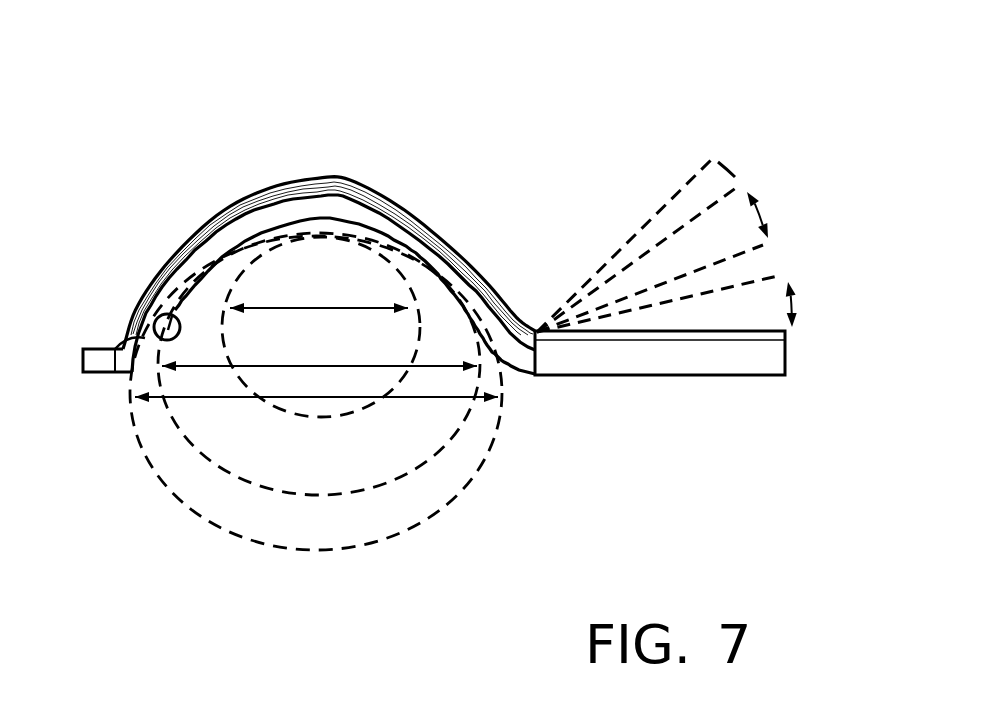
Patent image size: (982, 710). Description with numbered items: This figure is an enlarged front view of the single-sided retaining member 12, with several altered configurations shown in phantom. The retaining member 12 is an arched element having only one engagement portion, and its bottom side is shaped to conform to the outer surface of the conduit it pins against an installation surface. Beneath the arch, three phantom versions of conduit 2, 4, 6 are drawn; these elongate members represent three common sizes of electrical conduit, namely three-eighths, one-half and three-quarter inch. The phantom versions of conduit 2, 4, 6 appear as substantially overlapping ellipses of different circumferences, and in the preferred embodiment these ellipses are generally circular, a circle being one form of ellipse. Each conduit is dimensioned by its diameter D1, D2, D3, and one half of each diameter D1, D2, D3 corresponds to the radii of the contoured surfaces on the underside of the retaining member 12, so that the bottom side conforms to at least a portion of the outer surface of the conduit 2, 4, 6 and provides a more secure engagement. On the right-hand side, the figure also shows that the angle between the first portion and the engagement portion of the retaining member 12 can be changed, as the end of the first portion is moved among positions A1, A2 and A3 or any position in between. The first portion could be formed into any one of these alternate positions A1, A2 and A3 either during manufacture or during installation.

The retaining member 12 is at (476, 167).
The elongate member 2 is at (353, 393).
The elongate member 4 is at (397, 483).
The elongate member 6 is at (275, 548).
The diameter D1 is at (283, 307).
The diameter D2 is at (325, 366).
The diameter D3 is at (227, 400).
The position A1 is at (813, 328).
The position A2 is at (787, 231).
The position A3 is at (741, 155).